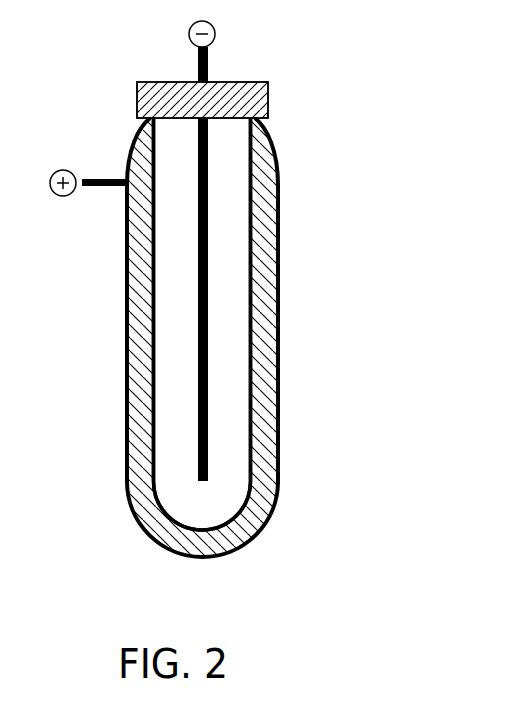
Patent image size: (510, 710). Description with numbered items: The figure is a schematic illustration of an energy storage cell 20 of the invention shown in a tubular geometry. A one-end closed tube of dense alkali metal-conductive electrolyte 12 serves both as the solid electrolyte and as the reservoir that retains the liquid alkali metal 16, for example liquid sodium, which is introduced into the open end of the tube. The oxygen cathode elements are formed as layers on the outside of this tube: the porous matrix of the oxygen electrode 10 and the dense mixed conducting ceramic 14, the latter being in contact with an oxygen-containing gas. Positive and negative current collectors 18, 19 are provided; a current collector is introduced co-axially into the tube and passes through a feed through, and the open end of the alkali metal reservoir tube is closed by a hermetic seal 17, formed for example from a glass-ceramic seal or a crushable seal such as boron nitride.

The porous matrix of the oxygen electrode 10 is at (265, 437).
The dense alkali metal-conductive electrolyte 12 is at (255, 156).
The dense mixed conducting ceramic 14 is at (278, 257).
The liquid alkali metal 16 is at (228, 332).
The cap 17 is at (252, 108).
The positive current collector 18 is at (108, 177).
The negative current collector 19 is at (198, 59).
The energy storage cell 20 is at (347, 93).